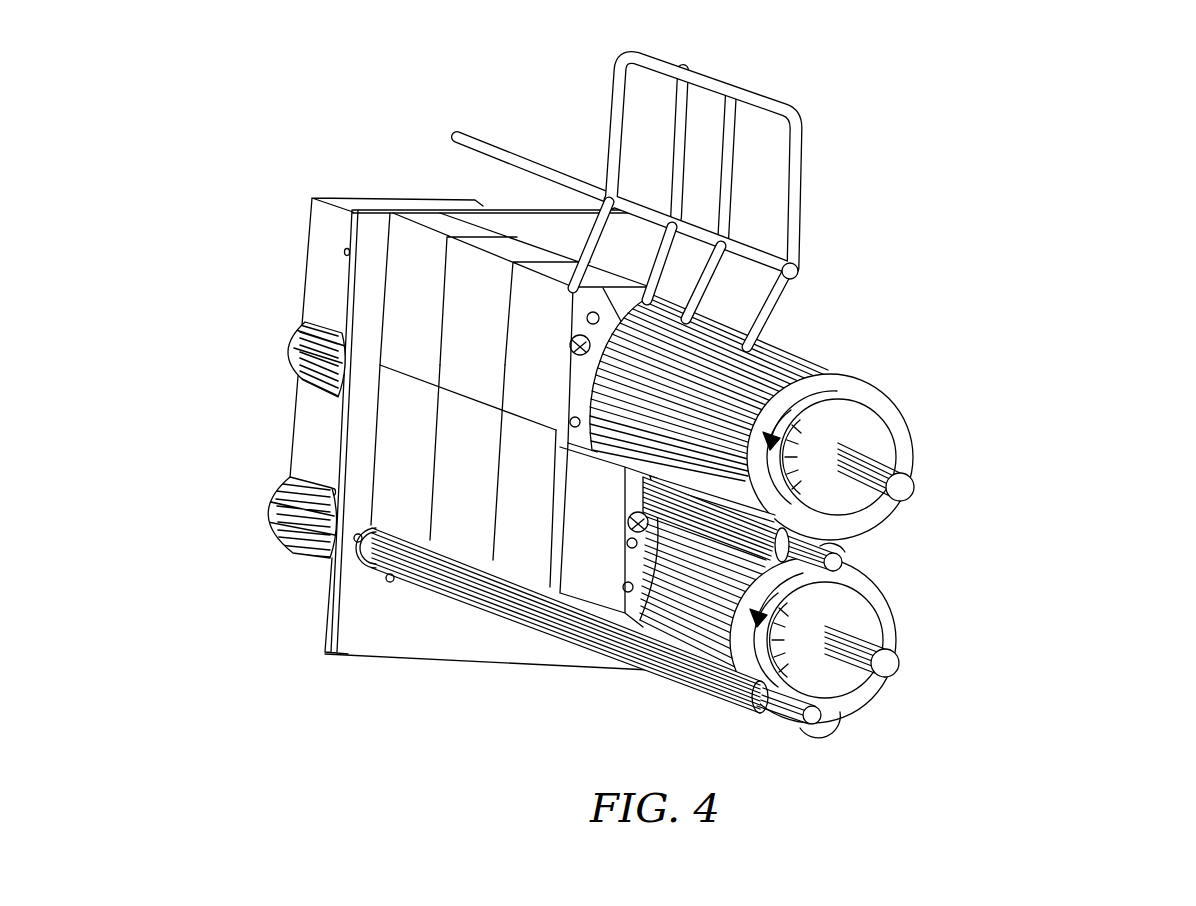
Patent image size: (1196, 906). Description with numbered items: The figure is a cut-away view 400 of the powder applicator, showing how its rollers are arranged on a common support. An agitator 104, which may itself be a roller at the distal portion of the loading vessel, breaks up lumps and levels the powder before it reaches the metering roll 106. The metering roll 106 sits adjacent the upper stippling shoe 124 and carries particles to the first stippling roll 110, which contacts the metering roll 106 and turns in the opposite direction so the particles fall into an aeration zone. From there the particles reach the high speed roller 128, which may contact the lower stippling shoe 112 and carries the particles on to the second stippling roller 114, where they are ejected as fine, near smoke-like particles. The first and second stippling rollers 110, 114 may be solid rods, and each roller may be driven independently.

The view 400 is at (710, 398).
The agitator 104 is at (752, 82).
The metering roll 106 is at (878, 397).
The first stippling roll 110 is at (843, 562).
The lower stippling shoe 112 is at (393, 467).
The second stippling roller 114 is at (822, 724).
The upper stippling shoe 124 is at (405, 325).
The high speed roller 128 is at (893, 619).